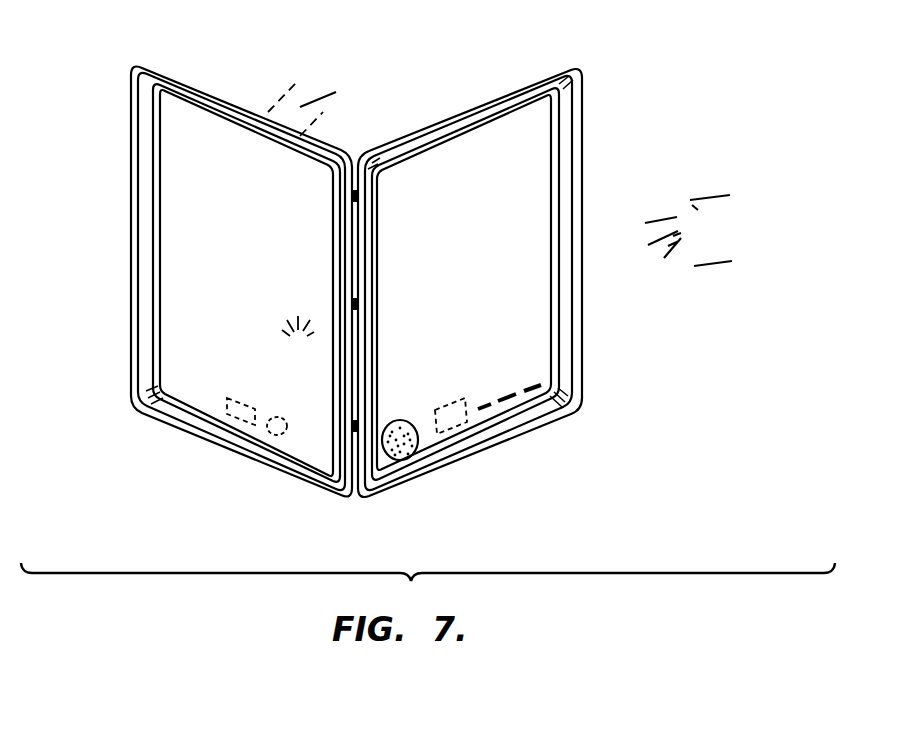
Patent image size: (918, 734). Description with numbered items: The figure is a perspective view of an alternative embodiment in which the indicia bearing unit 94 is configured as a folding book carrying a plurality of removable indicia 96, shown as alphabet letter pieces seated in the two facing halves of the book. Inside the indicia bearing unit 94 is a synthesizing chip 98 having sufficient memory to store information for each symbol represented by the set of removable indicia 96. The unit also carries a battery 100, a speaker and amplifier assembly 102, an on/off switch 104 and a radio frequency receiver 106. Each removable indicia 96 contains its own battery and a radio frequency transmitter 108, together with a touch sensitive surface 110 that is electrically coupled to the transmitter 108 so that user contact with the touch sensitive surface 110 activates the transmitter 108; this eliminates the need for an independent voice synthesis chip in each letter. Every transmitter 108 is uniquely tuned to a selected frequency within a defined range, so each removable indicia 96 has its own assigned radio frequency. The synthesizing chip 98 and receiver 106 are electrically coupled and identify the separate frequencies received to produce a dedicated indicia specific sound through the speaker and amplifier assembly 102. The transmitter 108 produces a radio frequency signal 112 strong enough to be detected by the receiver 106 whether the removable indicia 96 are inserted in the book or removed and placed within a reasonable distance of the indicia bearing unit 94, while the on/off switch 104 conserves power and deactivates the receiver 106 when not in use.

The indicia bearing unit 94 is at (560, 102).
The removable indicia 96 is at (513, 120).
The synthesizing chip 98 is at (252, 167).
The battery 100 is at (272, 432).
The speaker and amplifier assembly 102 is at (420, 462).
The on/off switch 104 is at (523, 378).
The radio frequency receiver 106 is at (453, 420).
The radio frequency transmitter 108 is at (284, 344).
The touch sensitive surface 110 is at (318, 57).
The radio frequency signal 112 is at (288, 330).